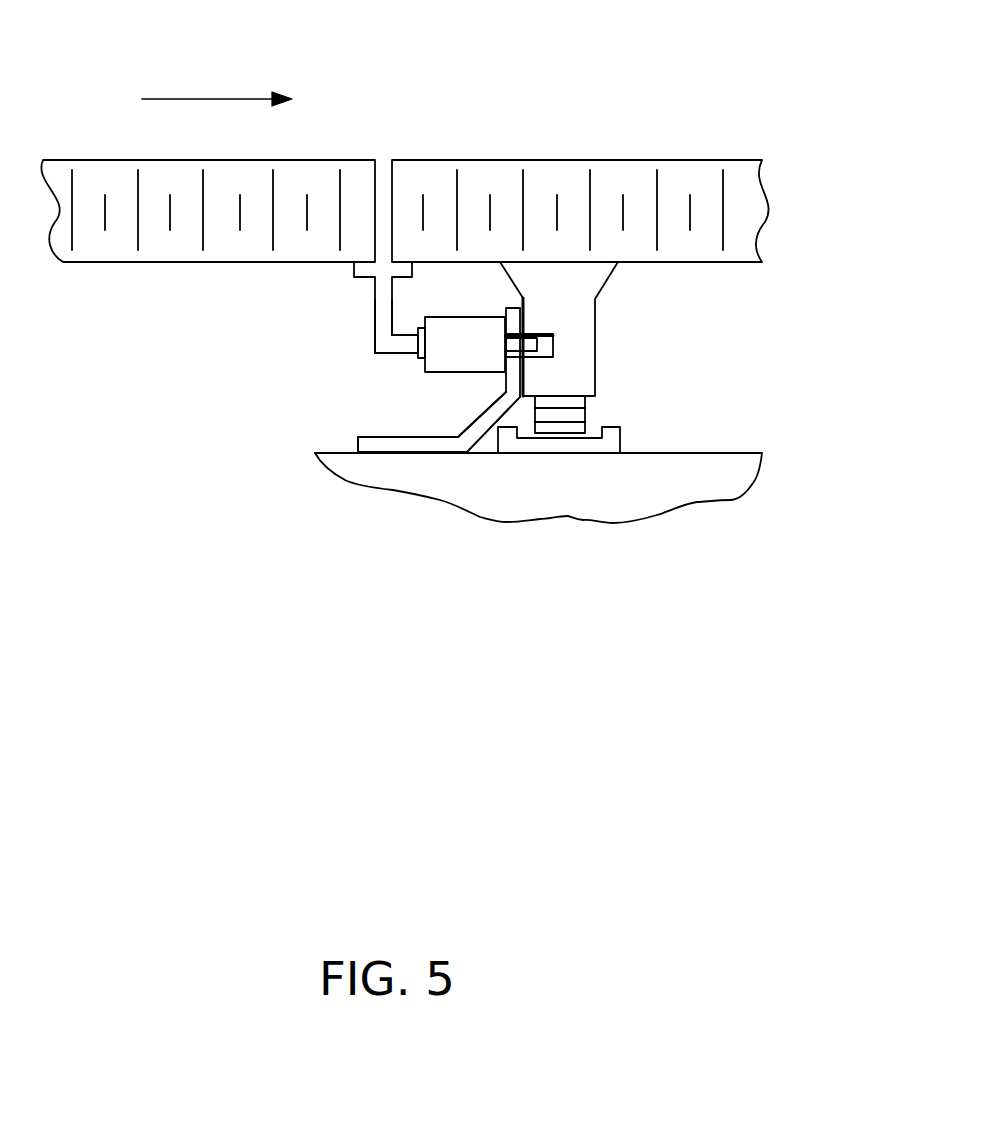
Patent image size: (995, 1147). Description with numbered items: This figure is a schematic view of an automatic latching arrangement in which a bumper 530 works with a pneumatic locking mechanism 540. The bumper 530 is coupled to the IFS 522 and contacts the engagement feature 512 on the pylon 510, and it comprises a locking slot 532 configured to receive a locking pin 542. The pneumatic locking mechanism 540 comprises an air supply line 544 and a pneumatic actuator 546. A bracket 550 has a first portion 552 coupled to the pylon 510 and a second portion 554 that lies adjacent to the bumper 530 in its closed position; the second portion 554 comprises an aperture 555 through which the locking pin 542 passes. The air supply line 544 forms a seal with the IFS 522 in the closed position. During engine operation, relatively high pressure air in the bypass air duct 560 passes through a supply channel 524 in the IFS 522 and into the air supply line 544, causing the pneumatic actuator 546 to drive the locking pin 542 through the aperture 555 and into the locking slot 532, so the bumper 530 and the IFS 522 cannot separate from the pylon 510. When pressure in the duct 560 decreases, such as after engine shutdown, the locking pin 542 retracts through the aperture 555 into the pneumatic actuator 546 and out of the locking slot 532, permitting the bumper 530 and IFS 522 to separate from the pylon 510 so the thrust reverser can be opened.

The pylon 510 is at (698, 505).
The engagement feature 512 is at (565, 453).
The IFS 522 is at (610, 262).
The supply channel 524 is at (375, 220).
The bumper 530 is at (597, 332).
The locking slot 532 is at (553, 343).
The pneumatic locking mechanism 540 is at (338, 362).
The locking pin 542 is at (537, 345).
The air supply line 544 is at (375, 323).
The pneumatic actuator 546 is at (460, 317).
The bracket 550 is at (487, 453).
The first portion 552 is at (387, 453).
The second portion 554 is at (513, 307).
The aperture 555 is at (528, 332).
The bypass air duct 560 is at (196, 101).